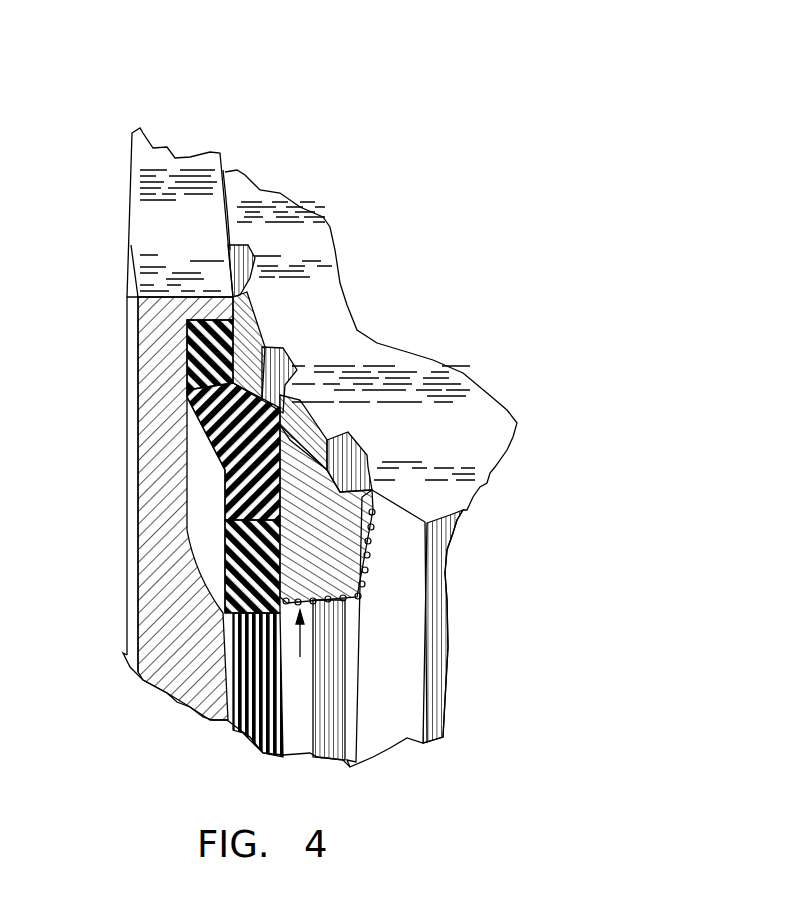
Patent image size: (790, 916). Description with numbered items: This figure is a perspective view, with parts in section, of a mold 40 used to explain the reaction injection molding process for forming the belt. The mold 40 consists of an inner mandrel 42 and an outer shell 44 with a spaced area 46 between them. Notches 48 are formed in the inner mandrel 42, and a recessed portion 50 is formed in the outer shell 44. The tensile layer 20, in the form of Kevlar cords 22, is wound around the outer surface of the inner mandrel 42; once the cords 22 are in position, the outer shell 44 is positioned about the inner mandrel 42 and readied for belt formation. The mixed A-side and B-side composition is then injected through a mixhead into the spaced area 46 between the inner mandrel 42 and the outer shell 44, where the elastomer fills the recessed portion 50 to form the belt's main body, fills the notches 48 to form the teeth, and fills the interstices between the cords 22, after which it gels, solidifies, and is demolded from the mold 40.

The mold 40 is at (250, 157).
The inner mandrel 42 is at (303, 293).
The outer shell 44 is at (163, 272).
The spaced area 46 is at (222, 155).
The notches 48 is at (360, 457).
The recessed portion 50 is at (192, 450).
The Kevlar cords 22 is at (362, 603).
The tensile layer 20 is at (297, 650).